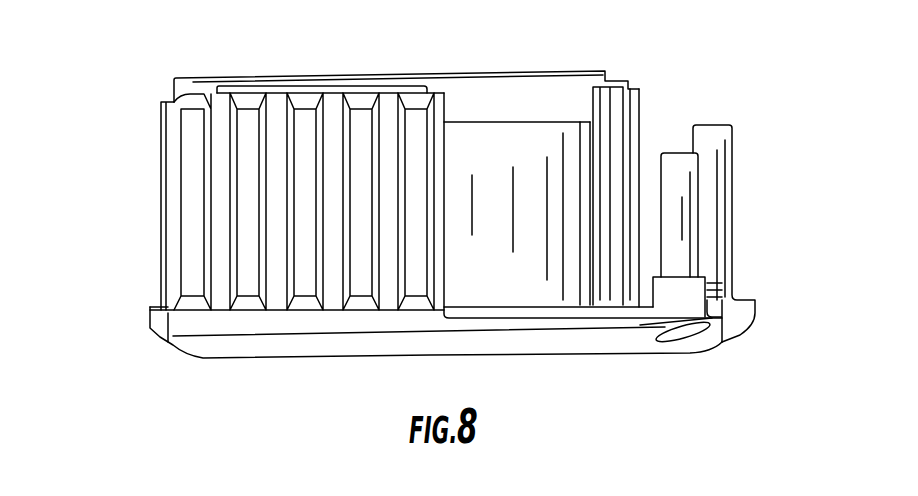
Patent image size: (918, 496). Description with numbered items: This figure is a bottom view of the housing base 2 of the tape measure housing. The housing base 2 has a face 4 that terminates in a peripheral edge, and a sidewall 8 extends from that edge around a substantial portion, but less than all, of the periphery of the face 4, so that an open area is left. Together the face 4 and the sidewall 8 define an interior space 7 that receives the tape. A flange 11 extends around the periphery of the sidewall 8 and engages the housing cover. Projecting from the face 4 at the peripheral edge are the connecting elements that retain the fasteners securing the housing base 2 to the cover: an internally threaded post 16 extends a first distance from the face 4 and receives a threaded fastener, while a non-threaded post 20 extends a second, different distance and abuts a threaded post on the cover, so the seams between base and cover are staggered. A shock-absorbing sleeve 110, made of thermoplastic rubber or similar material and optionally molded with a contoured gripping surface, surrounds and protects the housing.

The housing base 2 is at (157, 78).
The shock-absorbing sleeve 110 is at (180, 190).
The flange 11 is at (410, 73).
The sidewall 8 is at (550, 132).
The interior space 7 is at (513, 184).
The internally threaded post 16 is at (717, 177).
The non-threaded post 20 is at (682, 215).
The face 4 is at (662, 350).